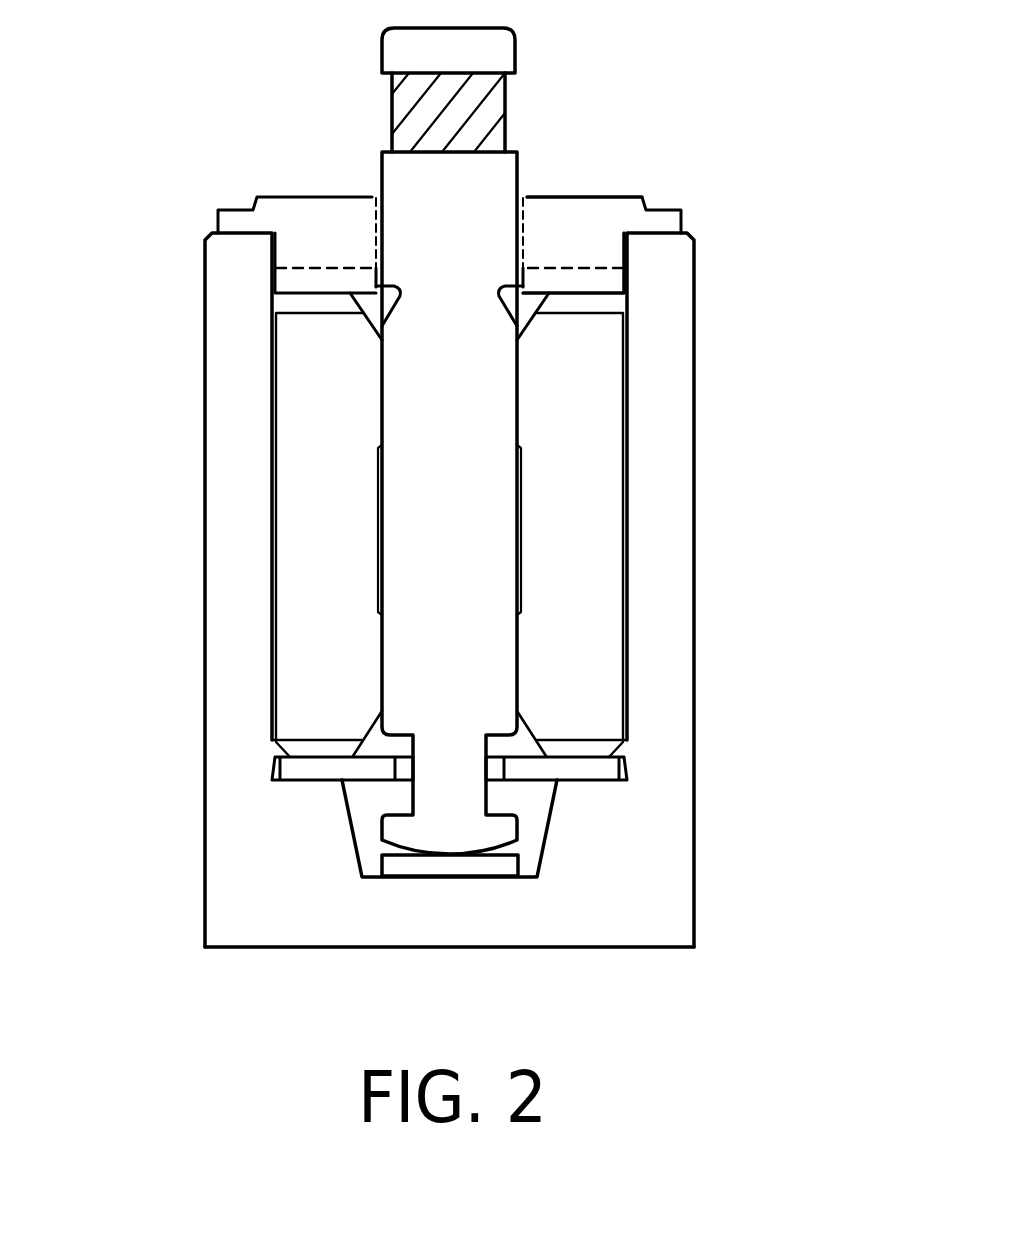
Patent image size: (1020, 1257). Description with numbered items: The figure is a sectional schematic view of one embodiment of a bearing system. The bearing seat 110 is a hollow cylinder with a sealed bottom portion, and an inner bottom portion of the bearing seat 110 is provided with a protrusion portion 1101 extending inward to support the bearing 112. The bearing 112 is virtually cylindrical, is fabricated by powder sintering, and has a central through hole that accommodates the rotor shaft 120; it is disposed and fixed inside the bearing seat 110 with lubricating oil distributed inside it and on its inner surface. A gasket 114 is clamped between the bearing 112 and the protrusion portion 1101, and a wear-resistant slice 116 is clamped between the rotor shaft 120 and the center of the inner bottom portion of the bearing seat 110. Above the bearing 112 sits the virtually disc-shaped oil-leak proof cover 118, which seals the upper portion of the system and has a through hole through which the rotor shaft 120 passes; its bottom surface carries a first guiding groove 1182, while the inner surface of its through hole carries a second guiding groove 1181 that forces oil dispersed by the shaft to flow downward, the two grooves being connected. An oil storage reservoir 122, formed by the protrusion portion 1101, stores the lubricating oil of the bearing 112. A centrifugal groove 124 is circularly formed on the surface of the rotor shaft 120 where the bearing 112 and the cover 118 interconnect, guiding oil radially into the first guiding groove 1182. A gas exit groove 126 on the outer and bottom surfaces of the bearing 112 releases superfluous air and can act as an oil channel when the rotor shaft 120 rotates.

The bearing seat 110 is at (243, 625).
The protrusion portion 1101 is at (330, 802).
The bearing 112 is at (315, 390).
The gasket 114 is at (593, 767).
The wear-resistant slice 116 is at (452, 866).
The oil-leak proof cover 118 is at (308, 213).
The second guiding groove 1181 is at (527, 197).
The first guiding groove 1182 is at (610, 283).
The rotor shaft 120 is at (412, 183).
The oil storage reservoir 122 is at (532, 798).
The centrifugal groove 124 is at (507, 297).
The gas exit groove 126 is at (627, 460).